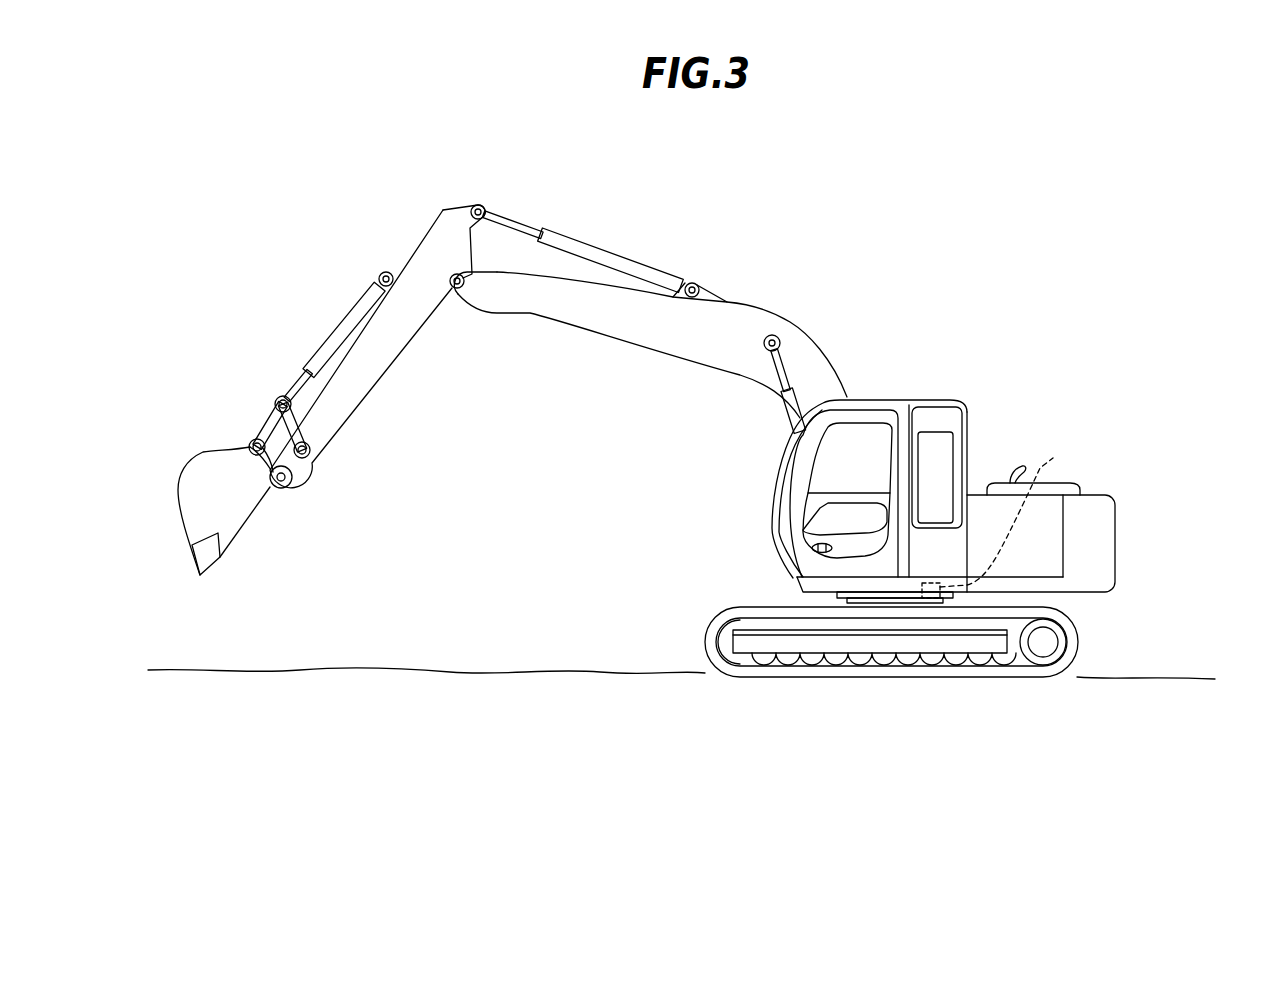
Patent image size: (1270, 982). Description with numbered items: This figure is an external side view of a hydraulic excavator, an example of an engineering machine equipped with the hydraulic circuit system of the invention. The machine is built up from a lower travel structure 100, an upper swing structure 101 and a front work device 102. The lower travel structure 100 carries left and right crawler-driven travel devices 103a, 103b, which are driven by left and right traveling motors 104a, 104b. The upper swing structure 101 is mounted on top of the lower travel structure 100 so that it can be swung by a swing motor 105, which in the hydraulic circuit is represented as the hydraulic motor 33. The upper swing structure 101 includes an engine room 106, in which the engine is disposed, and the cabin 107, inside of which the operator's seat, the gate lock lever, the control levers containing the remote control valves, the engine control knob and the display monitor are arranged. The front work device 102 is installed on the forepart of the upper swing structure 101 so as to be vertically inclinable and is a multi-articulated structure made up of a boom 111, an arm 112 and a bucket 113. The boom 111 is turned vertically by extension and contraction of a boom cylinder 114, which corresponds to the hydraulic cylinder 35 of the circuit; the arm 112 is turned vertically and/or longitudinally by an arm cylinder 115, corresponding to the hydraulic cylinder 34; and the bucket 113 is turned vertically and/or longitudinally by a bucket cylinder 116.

The lower travel structure 100 is at (892, 660).
The upper swing structure 101 is at (995, 502).
The front work device 102 is at (786, 290).
The crawler-driven travel device 103a is at (891, 642).
The crawler-driven travel device 103b is at (891, 642).
The traveling motor 104a is at (1133, 642).
The traveling motor 104b is at (1052, 640).
The swing motor 105 is at (1046, 519).
The hydraulic motor 33 is at (1053, 458).
The engine room 106 is at (1043, 548).
The cabin 107 is at (887, 402).
The boom 111 is at (583, 313).
The arm 112 is at (368, 375).
The bucket 113 is at (243, 518).
The boom cylinder 114 is at (724, 393).
The hydraulic cylinder 35 is at (788, 420).
The arm cylinder 115 is at (586, 245).
The hydraulic cylinder 34 is at (612, 250).
The bucket cylinder 116 is at (333, 330).